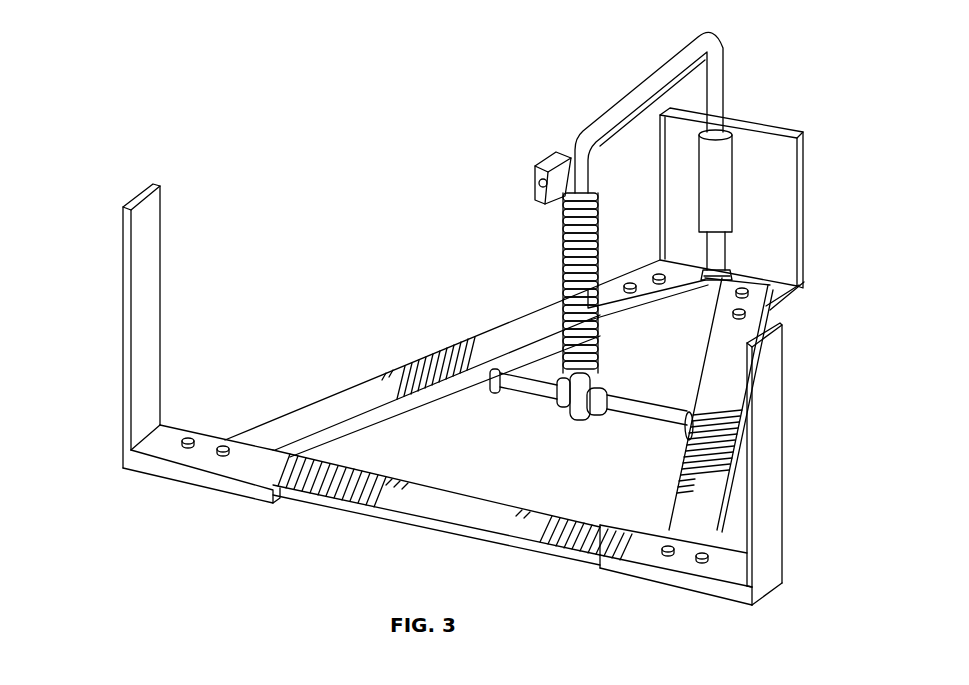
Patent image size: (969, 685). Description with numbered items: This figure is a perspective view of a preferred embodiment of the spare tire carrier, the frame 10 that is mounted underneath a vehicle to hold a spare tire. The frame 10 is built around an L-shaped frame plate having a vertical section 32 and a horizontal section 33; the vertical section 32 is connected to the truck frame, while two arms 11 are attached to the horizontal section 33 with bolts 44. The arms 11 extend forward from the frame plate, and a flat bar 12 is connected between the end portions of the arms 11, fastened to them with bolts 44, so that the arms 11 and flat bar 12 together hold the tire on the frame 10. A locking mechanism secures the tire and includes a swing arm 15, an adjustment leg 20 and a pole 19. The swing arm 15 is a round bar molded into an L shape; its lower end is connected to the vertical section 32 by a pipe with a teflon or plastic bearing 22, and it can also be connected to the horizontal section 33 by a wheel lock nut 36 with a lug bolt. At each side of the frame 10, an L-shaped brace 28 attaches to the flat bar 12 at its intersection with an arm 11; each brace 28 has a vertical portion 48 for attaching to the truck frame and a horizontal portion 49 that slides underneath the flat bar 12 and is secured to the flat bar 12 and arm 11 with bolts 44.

The frame 10 is at (318, 188).
The arms 11 is at (360, 397).
The flat bar 12 is at (432, 505).
The swing arm 15 is at (630, 98).
The pole 19 is at (523, 393).
The adjustment leg 20 is at (563, 270).
The pipe with teflon or plastic bearing/bushing 22 is at (733, 190).
The braces 28 is at (140, 392).
The vertical section 32 is at (760, 213).
The horizontal section 33 is at (778, 290).
The wheel lock nut 36 is at (733, 267).
The bolts 44 is at (222, 458).
The vertical portion 48 is at (122, 295).
The horizontal portion 49 is at (230, 490).